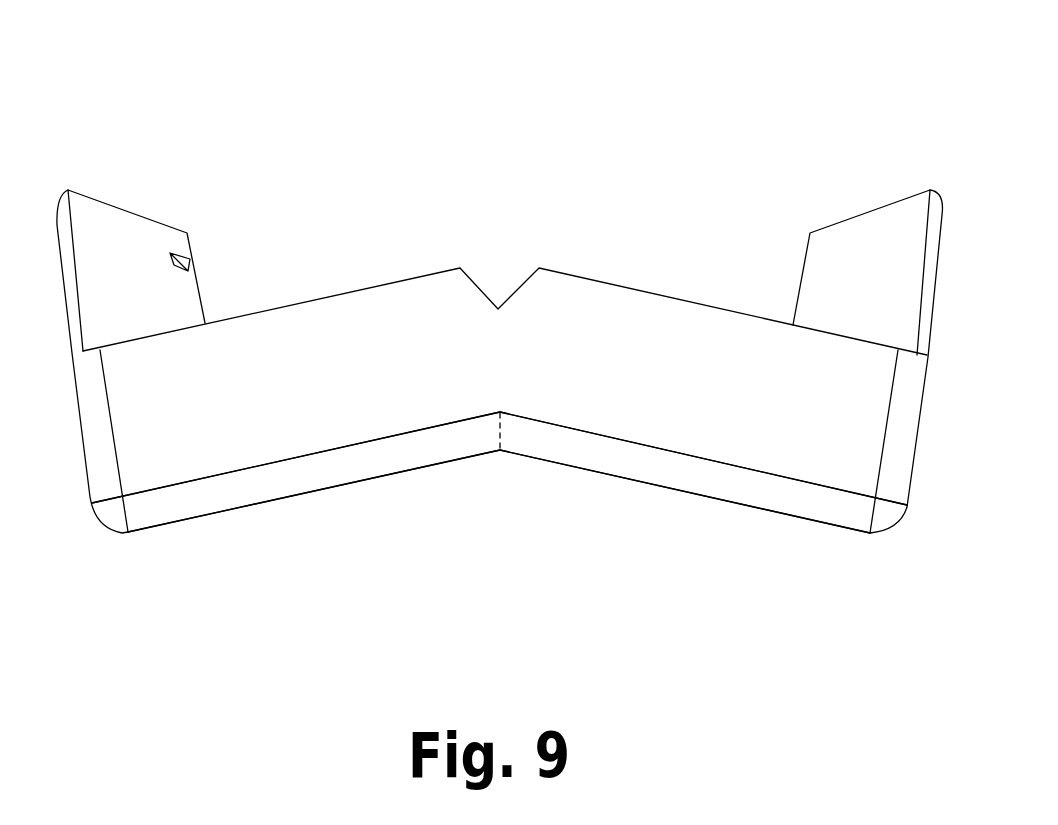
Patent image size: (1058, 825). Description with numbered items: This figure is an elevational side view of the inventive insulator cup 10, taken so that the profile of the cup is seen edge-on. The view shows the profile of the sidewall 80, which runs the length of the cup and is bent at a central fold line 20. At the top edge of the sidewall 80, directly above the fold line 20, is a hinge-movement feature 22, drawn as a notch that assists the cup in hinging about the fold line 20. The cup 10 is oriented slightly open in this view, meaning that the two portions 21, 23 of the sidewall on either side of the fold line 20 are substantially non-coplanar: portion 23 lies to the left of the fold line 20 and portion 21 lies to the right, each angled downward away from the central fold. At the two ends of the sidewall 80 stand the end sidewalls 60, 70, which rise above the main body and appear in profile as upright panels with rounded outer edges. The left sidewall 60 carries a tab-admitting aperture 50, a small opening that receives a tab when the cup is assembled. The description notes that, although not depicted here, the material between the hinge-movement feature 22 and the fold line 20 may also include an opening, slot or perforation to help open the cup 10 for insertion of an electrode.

The insulator cup 10 is at (747, 75).
The fold line 20 is at (500, 452).
The portion 21 is at (741, 555).
The hinge-movement feature 22 is at (500, 262).
The portion 23 is at (350, 516).
The tab-admitting aperture 50 is at (183, 262).
The sidewall 60 is at (108, 237).
The sidewall 70 is at (887, 217).
The sidewall 80 is at (282, 430).